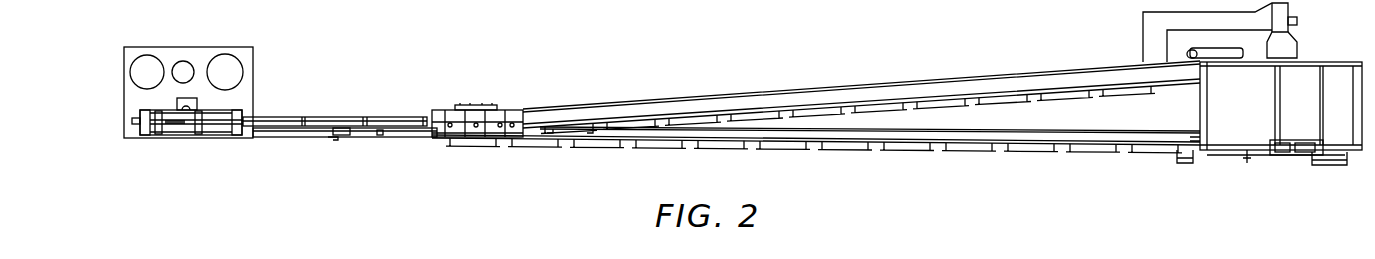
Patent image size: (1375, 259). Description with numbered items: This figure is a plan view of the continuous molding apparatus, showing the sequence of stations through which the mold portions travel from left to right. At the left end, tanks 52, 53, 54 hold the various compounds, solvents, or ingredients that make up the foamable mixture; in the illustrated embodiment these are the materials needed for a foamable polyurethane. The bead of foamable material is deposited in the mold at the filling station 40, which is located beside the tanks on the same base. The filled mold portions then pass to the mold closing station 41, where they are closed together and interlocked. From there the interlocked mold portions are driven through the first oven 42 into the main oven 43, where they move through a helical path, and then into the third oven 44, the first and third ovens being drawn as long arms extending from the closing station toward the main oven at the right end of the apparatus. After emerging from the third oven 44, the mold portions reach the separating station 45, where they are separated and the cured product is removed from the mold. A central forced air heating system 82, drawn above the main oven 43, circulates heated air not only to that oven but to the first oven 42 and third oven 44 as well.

The filling station 40 is at (190, 121).
The mold closing station 41 is at (382, 135).
The first oven 42 is at (823, 141).
The main oven 43 is at (1237, 137).
The third oven 44 is at (737, 100).
The separating station 45 is at (512, 117).
The tank 52 is at (147, 55).
The tank 53 is at (183, 61).
The tank 54 is at (225, 54).
The central forced air heating system 82 is at (1297, 49).